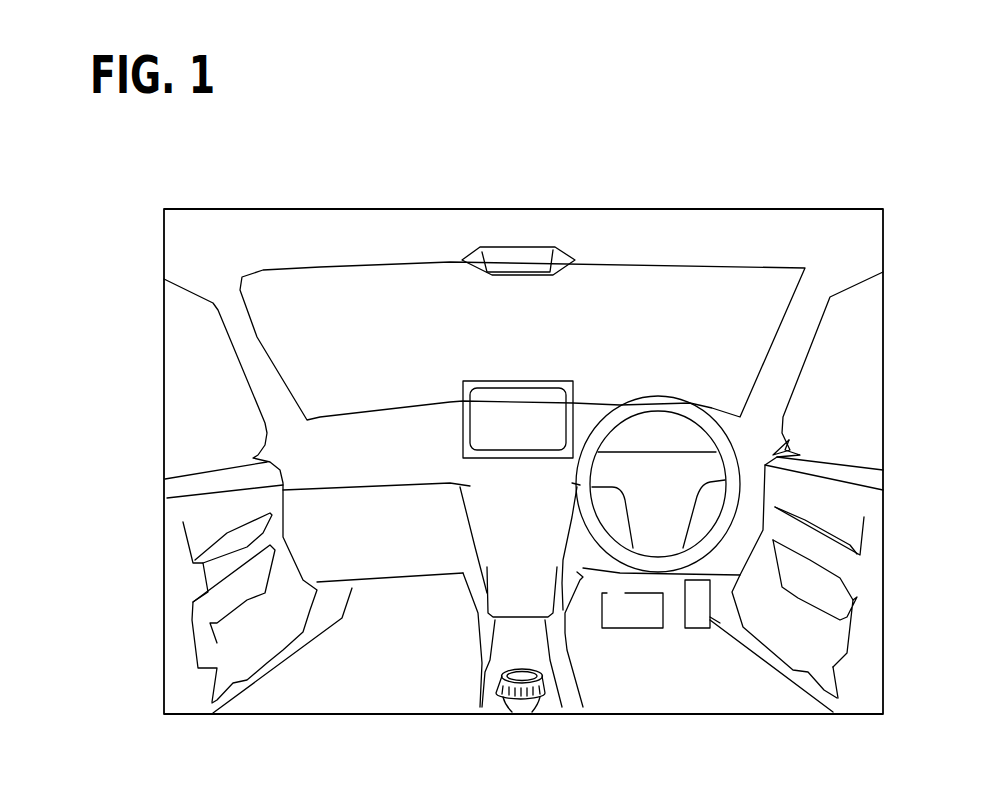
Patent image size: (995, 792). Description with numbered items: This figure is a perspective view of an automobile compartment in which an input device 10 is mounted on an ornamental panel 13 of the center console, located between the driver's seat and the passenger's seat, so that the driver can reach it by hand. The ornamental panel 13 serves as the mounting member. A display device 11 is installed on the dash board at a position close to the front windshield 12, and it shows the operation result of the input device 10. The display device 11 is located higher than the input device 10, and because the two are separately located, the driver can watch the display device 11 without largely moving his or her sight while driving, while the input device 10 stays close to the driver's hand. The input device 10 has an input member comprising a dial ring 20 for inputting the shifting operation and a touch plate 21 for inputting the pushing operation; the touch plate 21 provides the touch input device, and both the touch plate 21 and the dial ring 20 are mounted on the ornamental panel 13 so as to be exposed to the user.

The input device 10 is at (519, 719).
The display device 11 is at (487, 380).
The front windshield 12 is at (610, 283).
The ornamental panel 13 is at (545, 700).
The dial ring 20 is at (486, 719).
The touch plate 21 is at (520, 675).